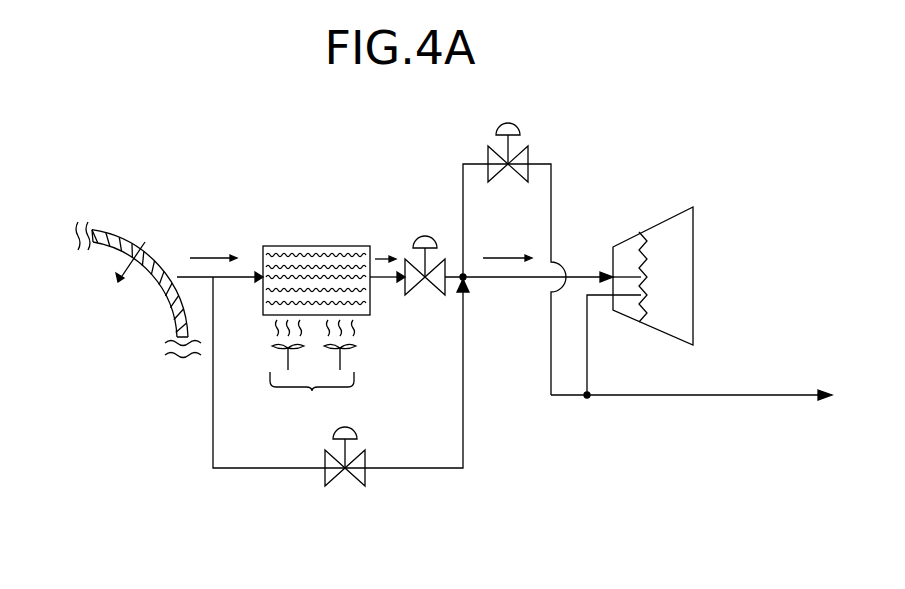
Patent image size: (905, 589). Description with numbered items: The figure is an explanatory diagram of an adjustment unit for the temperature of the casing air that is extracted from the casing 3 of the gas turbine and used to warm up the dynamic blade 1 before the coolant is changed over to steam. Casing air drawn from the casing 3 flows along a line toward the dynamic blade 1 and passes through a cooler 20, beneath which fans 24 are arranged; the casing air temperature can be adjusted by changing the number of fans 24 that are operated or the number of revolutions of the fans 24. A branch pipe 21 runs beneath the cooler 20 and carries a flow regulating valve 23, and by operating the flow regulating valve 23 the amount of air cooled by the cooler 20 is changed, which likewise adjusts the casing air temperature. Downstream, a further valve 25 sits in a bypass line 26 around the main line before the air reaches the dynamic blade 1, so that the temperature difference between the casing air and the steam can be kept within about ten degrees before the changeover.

The dynamic blade 1 is at (645, 243).
The casing 3 is at (145, 242).
The cooler 20 is at (300, 246).
The bypass pipe 21 is at (262, 470).
The flow regulating valve 23 is at (357, 472).
The fans 24 is at (313, 370).
The valve 25 is at (505, 120).
The bypass line 26 is at (553, 182).